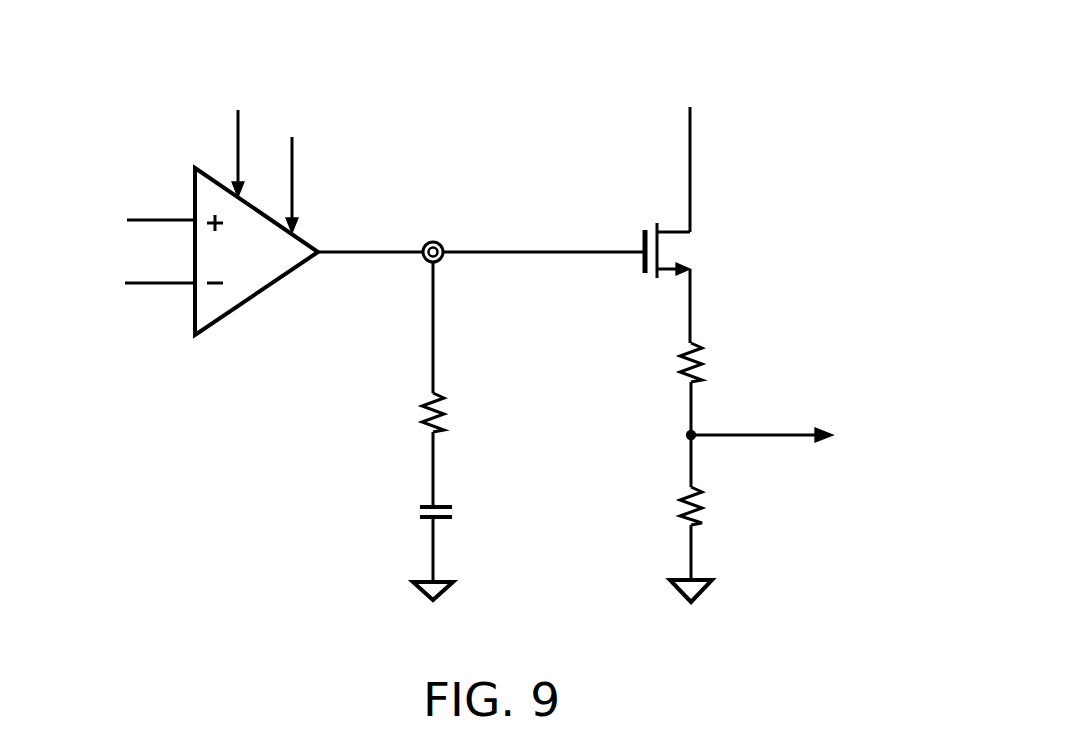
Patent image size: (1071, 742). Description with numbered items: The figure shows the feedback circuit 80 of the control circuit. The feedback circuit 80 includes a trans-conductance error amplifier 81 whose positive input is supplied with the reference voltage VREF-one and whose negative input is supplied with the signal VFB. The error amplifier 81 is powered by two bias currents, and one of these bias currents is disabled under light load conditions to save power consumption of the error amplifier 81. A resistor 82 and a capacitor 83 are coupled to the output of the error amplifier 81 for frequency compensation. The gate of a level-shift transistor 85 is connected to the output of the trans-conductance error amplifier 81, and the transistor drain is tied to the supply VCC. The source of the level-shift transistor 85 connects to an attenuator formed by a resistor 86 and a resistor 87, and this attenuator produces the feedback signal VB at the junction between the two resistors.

The feedback circuit 80 is at (930, 69).
The trans-conductance error amplifier 81 is at (258, 297).
The resistor 82 is at (452, 412).
The capacitor 83 is at (455, 512).
The level-shift transistor 85 is at (692, 250).
The resistor 86 is at (707, 362).
The resistor 87 is at (707, 508).